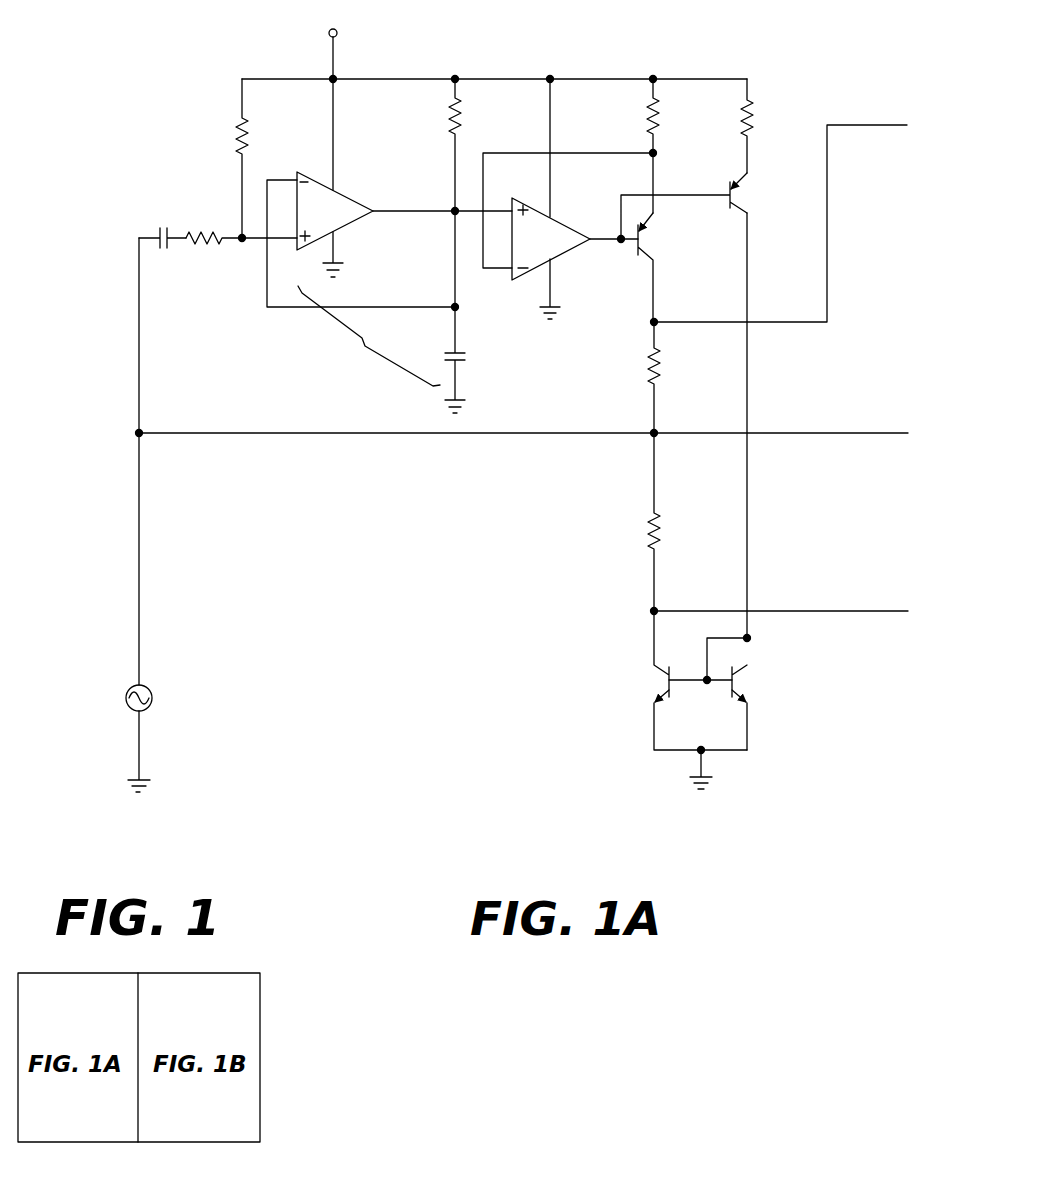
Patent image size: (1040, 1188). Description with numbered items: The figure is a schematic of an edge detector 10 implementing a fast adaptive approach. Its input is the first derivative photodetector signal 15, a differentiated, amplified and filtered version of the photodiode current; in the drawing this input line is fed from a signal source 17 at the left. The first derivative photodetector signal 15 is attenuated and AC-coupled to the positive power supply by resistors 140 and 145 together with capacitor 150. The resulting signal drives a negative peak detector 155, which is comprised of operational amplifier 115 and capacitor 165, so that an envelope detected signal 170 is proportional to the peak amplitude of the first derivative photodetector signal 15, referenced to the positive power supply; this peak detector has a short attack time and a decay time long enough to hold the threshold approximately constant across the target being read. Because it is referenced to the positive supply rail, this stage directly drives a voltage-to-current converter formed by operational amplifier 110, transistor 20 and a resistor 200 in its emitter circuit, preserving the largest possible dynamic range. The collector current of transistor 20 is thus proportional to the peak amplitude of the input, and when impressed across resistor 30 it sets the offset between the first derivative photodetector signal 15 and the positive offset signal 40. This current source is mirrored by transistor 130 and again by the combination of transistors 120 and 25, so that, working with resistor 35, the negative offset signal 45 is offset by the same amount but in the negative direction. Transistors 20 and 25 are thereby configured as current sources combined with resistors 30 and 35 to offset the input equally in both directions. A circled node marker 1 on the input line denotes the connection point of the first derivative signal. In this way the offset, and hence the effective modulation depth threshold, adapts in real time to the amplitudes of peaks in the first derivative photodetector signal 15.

The edge detector 10 is at (168, 93).
The first derivative photodetector signal 15 is at (263, 433).
The signal source 17 is at (147, 688).
The transistor 20 is at (636, 248).
The transistor 25 is at (660, 697).
The resistor 30 is at (662, 352).
The resistor 35 is at (652, 549).
The positive offset signal 40 is at (807, 323).
The negative offset signal 45 is at (788, 611).
The operational amplifier 110 is at (573, 228).
The operational amplifier 115 is at (353, 190).
The transistor 120 is at (726, 697).
The transistor 130 is at (735, 183).
The resistor 140 is at (248, 135).
The resistor 145 is at (188, 258).
The capacitor 150 is at (158, 233).
The negative peak detector 155 is at (369, 336).
The capacitor 165 is at (451, 352).
The envelope detected signal 170 is at (288, 307).
The resistor R200 200 is at (650, 102).
The node connector 1 is at (493, 433).